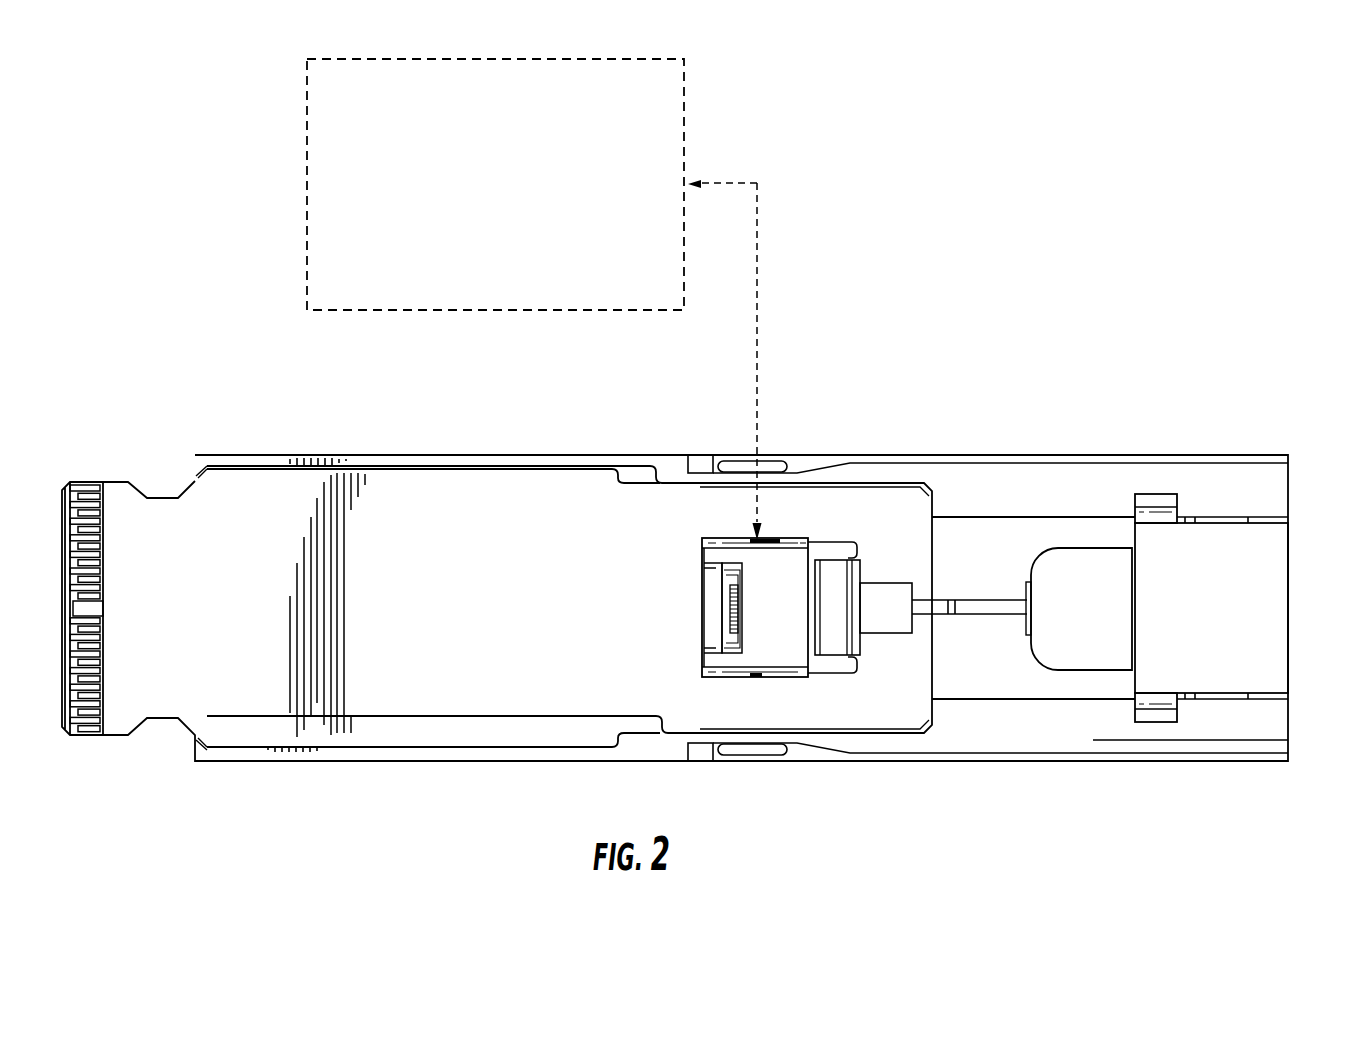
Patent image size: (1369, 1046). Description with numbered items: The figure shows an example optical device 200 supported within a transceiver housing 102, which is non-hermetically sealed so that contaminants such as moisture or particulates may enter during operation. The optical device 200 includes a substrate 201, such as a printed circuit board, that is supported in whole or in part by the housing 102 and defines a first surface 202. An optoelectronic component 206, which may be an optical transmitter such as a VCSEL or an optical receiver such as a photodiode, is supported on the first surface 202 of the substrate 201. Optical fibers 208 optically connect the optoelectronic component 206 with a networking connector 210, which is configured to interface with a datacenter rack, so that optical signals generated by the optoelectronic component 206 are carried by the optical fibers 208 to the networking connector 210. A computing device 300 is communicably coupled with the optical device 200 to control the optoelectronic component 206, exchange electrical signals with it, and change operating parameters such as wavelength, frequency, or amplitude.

The housing 102 is at (1052, 443).
The optical device 200 is at (372, 594).
The substrate 201 is at (173, 495).
The first surface 202 is at (393, 710).
The optoelectronic component 206 is at (782, 664).
The optical fibers 208 is at (964, 627).
The networking connector 210 is at (1270, 645).
The computing device 300 is at (692, 76).